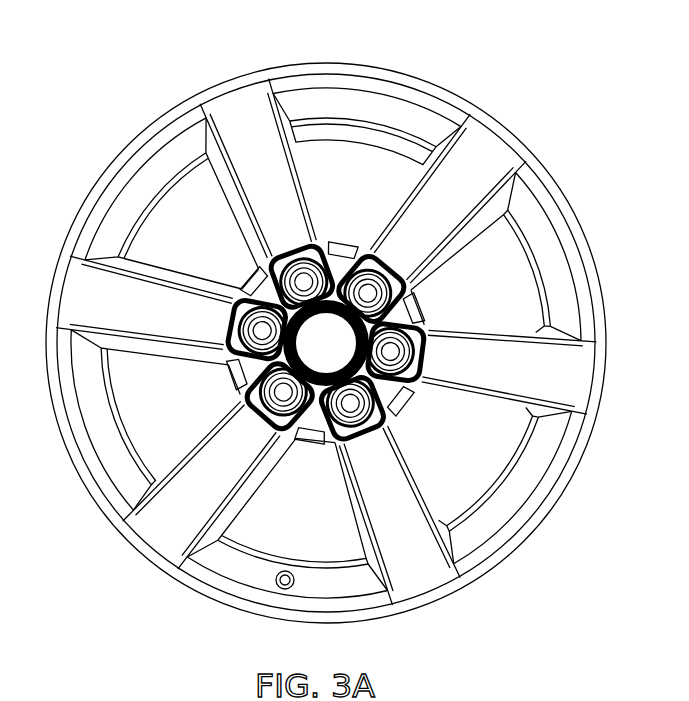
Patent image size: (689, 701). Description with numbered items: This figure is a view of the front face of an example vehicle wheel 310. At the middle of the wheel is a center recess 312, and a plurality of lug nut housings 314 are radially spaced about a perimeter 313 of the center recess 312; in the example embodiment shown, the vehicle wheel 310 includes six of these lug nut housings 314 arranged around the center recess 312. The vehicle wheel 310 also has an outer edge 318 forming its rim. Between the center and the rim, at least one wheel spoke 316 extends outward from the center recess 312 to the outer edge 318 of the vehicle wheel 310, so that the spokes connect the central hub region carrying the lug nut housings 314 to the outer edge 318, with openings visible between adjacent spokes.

The vehicle wheel 310 is at (456, 75).
The center recess 312 is at (407, 306).
The perimeter 313 is at (402, 396).
The lug nut housings 314 is at (403, 432).
The wheel spoke 316 is at (428, 590).
The outer edge 318 is at (90, 497).